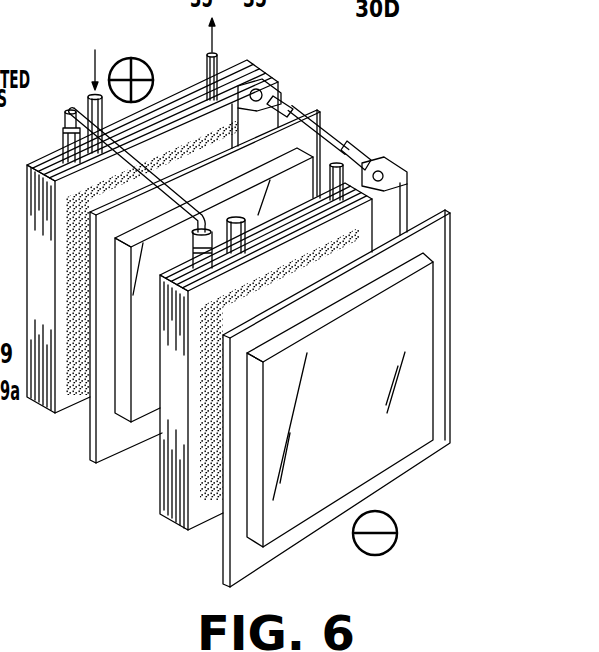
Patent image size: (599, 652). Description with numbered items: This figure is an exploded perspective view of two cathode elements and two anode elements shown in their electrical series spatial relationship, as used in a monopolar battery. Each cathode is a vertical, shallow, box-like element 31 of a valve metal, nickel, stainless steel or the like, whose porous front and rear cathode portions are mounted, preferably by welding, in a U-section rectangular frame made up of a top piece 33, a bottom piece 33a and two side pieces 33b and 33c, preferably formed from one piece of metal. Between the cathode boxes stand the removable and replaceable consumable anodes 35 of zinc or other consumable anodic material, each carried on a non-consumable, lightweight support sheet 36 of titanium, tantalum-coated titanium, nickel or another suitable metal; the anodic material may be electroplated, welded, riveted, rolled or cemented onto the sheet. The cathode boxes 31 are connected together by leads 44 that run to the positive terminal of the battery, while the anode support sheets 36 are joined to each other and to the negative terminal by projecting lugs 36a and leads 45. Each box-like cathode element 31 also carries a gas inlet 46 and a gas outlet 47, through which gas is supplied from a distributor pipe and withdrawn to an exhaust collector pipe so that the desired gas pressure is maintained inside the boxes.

The box-like cathode element 31 is at (268, 66).
The top frame piece 33 is at (189, 276).
The bottom frame piece 33a is at (188, 541).
The side frame piece 33b is at (168, 490).
The side frame piece 33c is at (378, 162).
The consumable anode 35 is at (100, 446).
The support sheet 36 is at (97, 412).
The projecting lug 36a is at (240, 90).
The lead 44 is at (63, 116).
The lead 45 is at (333, 120).
The gas inlet 46 is at (90, 96).
The gas outlet 47 is at (206, 60).